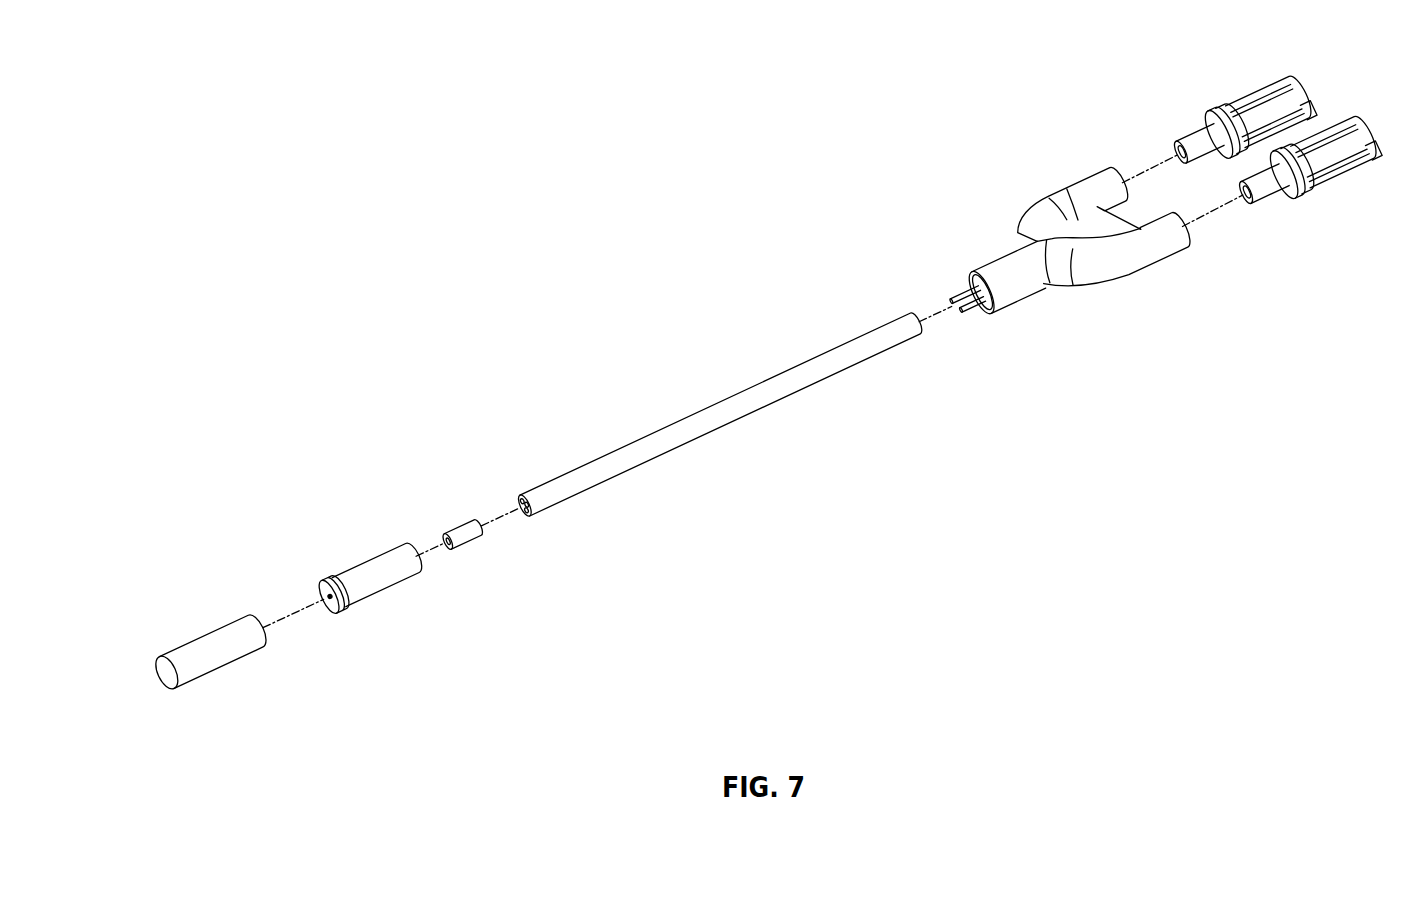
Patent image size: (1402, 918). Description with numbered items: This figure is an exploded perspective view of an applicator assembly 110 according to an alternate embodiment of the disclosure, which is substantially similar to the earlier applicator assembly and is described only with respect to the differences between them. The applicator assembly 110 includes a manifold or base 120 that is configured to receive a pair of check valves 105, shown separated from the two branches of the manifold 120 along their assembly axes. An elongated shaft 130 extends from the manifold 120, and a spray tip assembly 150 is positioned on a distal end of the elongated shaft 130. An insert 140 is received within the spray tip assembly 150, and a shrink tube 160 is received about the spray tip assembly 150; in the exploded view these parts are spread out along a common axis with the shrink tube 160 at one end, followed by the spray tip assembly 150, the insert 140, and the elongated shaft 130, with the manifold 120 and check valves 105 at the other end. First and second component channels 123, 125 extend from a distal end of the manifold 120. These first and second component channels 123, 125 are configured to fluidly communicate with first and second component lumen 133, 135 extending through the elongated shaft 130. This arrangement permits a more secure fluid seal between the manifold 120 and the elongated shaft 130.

The check valves 105 is at (1215, 88).
The applicator assembly 110 is at (597, 207).
The manifold 120 is at (1043, 198).
The first component channel 123 is at (968, 288).
The second component channel 125 is at (967, 302).
The elongated shaft 130 is at (690, 396).
The first component lumen 133 is at (518, 501).
The second component lumen 135 is at (518, 504).
The insert 140 is at (450, 520).
The spray tip assembly 150 is at (355, 554).
The shrink tube 160 is at (197, 623).